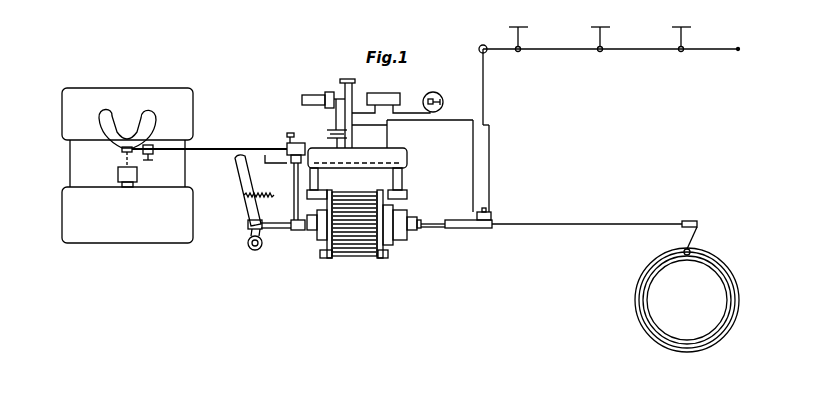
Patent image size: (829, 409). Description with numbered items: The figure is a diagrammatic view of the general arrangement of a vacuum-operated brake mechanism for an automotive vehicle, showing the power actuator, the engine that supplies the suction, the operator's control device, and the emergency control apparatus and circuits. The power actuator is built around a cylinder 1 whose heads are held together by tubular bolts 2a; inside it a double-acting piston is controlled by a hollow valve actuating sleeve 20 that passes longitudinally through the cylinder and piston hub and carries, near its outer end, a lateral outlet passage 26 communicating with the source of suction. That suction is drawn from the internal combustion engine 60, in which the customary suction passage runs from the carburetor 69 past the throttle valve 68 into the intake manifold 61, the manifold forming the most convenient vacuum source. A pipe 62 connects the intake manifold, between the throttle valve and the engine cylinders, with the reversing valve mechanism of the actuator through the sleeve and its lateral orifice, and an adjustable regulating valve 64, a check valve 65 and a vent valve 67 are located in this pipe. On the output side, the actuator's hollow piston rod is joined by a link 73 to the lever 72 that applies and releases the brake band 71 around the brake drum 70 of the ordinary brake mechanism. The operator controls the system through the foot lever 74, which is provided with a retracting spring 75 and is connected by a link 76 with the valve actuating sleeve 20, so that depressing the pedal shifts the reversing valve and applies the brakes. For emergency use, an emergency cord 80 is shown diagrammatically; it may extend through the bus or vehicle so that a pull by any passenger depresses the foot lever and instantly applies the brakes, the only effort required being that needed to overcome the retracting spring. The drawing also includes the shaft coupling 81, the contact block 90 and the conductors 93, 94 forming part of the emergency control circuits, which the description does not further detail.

The cylinder 1 is at (354, 240).
The tubular bolts 2a is at (368, 256).
The valve actuating sleeve 20 is at (282, 229).
The lateral outlet passage 26 is at (293, 209).
The internal combustion engine 60 is at (186, 109).
The intake manifold 61 is at (104, 116).
The pipe 62 is at (209, 144).
The adjustable regulating valve 64 is at (151, 160).
The check valve 65 is at (284, 143).
The vent valve 67 is at (291, 164).
The throttle valve 68 is at (121, 152).
The carburetor 69 is at (118, 174).
The brake drum 70 is at (649, 304).
The brake band 71 is at (739, 300).
The lever 72 is at (693, 242).
The link 73 is at (613, 223).
The foot lever 74 is at (239, 190).
The retracting spring 75 is at (259, 185).
The link 76 is at (249, 236).
The emergency cord 80 is at (485, 110).
The shaft coupling 81 is at (476, 230).
The contact block 90 is at (491, 215).
The conductor 93 is at (490, 171).
The conductor 94 is at (472, 171).